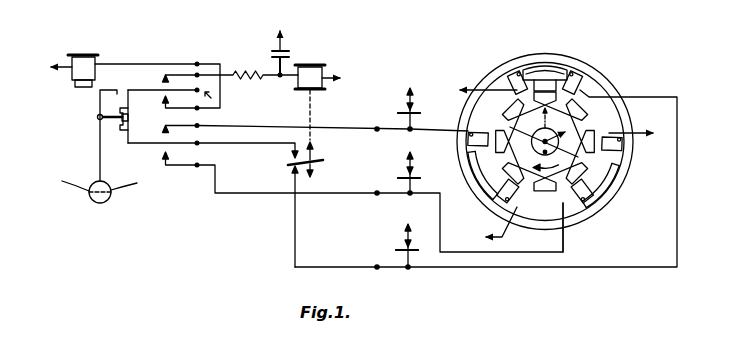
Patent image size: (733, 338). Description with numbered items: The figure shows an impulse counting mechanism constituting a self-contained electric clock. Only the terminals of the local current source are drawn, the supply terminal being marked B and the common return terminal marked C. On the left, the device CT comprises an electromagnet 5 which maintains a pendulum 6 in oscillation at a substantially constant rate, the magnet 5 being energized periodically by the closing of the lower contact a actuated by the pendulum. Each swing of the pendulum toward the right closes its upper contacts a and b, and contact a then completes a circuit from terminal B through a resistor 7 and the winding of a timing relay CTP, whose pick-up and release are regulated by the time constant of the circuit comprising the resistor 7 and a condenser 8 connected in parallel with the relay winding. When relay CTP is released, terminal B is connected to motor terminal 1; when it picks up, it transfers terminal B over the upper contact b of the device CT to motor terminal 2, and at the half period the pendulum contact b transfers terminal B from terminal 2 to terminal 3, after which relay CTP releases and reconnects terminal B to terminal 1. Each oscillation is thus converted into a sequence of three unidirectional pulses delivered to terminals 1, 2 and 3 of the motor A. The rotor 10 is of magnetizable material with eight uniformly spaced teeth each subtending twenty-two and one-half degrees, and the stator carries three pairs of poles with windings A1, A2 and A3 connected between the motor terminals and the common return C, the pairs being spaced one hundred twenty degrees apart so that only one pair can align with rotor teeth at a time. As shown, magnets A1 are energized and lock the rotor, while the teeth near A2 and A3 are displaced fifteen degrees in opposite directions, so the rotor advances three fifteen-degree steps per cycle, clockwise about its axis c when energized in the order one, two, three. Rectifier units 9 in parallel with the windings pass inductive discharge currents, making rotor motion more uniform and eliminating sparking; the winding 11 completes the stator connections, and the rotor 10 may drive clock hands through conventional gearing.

The motor terminal 1 is at (397, 240).
The motor terminal 2 is at (398, 102).
The motor terminal 3 is at (398, 167).
The electromagnet 5 is at (72, 77).
The pendulum 6 is at (89, 197).
The resistor 7 is at (238, 80).
The condenser 8 is at (273, 49).
The rectifier units 9 is at (426, 109).
The rotor 10 is at (545, 155).
The stator winding 11 is at (590, 214).
The motor A is at (602, 74).
The stator winding A1 is at (517, 61).
The stator winding A2 is at (480, 189).
The stator winding A3 is at (618, 161).
The supply terminal B is at (323, 158).
The pulsing device CT is at (65, 62).
The timing relay CTP is at (325, 69).
The pendulum contact a is at (168, 90).
The pendulum contact b is at (168, 142).
The rotor axis c is at (583, 158).
The common return terminal C is at (39, 64).